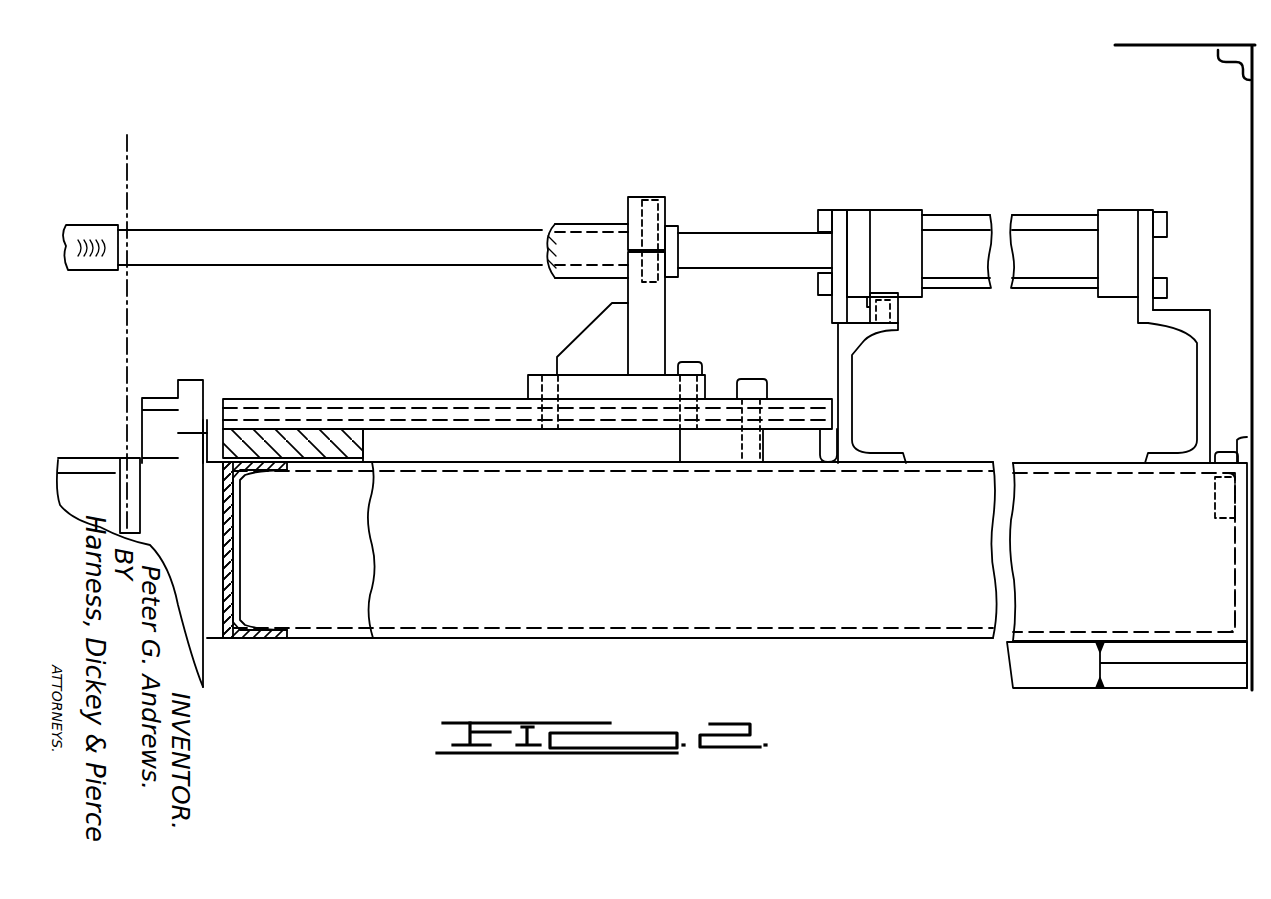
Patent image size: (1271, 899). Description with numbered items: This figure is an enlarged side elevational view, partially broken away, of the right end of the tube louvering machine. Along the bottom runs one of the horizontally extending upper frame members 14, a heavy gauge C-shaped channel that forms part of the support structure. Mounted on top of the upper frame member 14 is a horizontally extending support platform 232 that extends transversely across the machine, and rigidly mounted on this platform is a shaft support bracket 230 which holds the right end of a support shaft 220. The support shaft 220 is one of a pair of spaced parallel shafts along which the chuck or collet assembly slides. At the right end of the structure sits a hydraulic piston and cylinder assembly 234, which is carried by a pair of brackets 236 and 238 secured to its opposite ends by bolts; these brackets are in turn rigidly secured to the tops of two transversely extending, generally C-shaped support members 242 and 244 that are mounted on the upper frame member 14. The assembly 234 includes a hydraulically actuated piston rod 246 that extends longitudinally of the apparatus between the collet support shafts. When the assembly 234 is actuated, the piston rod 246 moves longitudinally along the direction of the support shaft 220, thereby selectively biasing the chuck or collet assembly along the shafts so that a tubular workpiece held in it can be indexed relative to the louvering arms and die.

The upper frame member 14 is at (528, 650).
The support shaft 220 is at (559, 288).
The shaft support bracket 230 is at (677, 325).
The support platform 232 is at (425, 392).
The hydraulic piston and cylinder assembly 234 is at (976, 210).
The bracket 236 is at (824, 330).
The bracket 238 is at (1178, 301).
The C-shaped support member 242 is at (862, 388).
The C-shaped support member 244 is at (1184, 384).
The piston rod 246 is at (717, 225).